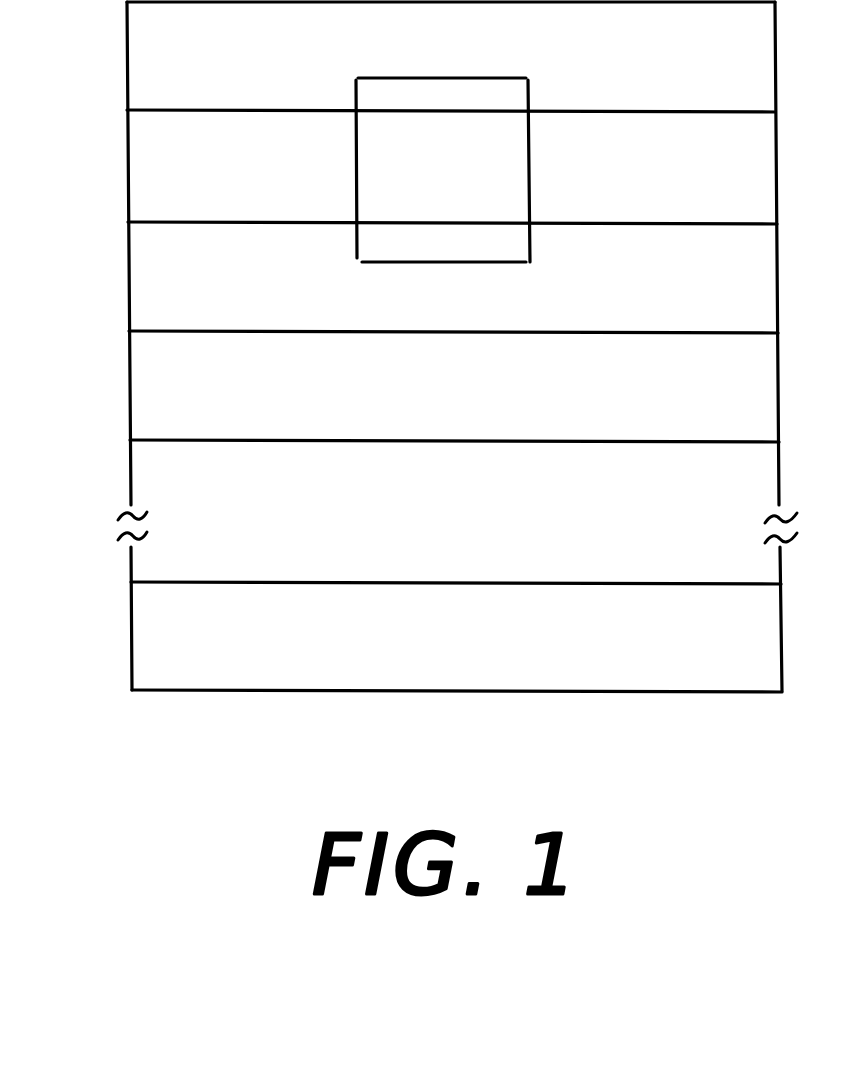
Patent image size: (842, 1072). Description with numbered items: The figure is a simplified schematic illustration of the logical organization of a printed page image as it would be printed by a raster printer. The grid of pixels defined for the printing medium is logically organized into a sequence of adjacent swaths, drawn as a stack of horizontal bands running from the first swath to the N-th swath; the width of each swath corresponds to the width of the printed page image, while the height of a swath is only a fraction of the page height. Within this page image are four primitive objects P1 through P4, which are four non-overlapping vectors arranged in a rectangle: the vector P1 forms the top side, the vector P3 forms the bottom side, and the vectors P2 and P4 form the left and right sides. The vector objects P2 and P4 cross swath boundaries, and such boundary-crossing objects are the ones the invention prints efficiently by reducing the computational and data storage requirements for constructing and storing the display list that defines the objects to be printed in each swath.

The primitive object P1 is at (479, 78).
The vector object P2 is at (356, 168).
The primitive object P3 is at (434, 262).
The vector object P4 is at (532, 168).